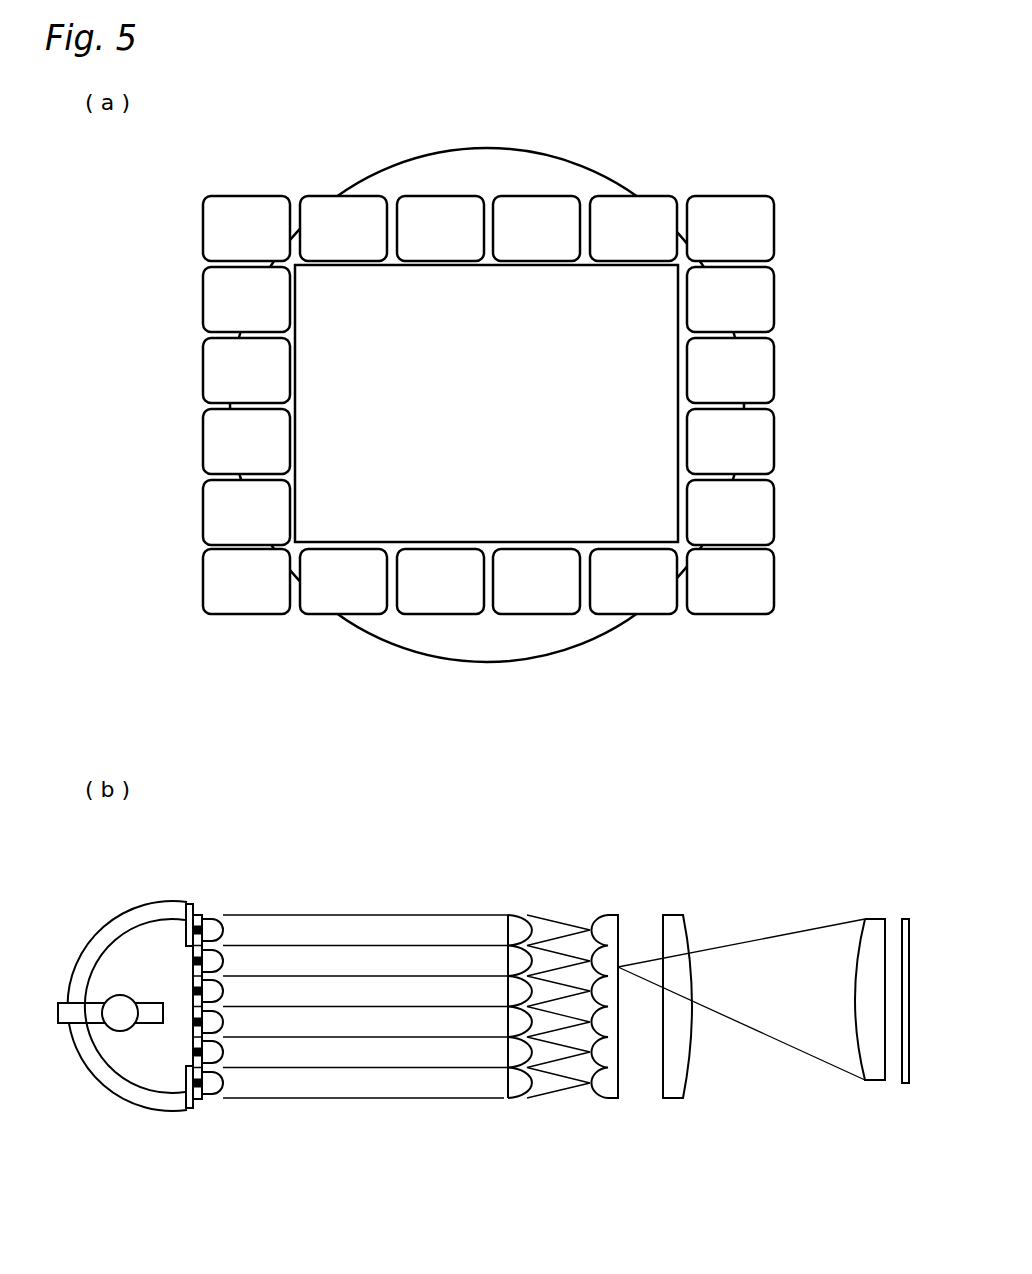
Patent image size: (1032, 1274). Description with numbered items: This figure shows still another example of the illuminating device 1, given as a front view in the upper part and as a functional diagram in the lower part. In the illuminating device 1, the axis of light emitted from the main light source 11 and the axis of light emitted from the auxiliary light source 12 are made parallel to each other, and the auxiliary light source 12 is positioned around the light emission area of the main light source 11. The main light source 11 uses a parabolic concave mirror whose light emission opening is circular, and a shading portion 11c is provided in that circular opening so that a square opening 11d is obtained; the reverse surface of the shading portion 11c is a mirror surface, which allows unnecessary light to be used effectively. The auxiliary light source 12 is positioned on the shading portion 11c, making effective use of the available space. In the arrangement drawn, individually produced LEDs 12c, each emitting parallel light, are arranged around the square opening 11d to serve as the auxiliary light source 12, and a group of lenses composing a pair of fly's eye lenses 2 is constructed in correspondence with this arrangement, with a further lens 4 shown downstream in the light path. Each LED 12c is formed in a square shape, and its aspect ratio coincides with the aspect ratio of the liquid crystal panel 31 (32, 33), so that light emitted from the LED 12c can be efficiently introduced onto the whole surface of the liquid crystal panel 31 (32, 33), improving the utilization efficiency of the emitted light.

The illuminating device 1 is at (319, 138).
The main light source 11 is at (465, 134).
The shading portion 11c is at (487, 661).
The square opening 11d is at (411, 540).
The auxiliary light source 12 is at (236, 184).
The LED 12c is at (203, 229).
The fly's eye lenses 2 is at (618, 906).
The condenser lens 4 is at (670, 913).
The liquid crystal panel 31 is at (903, 918).
The liquid crystal panel 32 is at (870, 999).
The liquid crystal panel 33 is at (905, 1001).